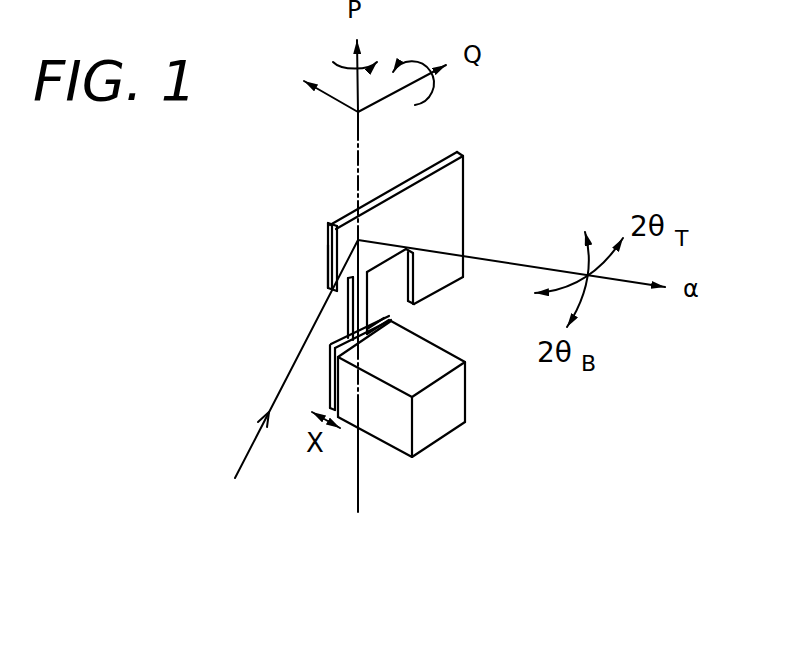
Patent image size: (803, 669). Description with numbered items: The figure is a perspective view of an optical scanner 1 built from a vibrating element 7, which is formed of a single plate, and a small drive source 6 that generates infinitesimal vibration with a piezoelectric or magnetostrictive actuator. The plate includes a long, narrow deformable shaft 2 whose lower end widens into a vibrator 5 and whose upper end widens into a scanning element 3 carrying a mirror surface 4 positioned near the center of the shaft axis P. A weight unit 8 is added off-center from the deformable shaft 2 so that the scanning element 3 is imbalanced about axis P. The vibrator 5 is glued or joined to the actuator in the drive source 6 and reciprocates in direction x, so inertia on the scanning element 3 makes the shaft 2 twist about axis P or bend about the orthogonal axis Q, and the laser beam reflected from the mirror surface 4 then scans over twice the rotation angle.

The optical scanner 1 is at (288, 317).
The deformable shaft 2 is at (367, 308).
The scanning element 3 is at (458, 178).
The mirror surface 4 is at (337, 222).
The vibrator 5 is at (330, 380).
The drive source 6 is at (458, 402).
The vibrating element 7 is at (327, 265).
The weight unit 8 is at (438, 282).